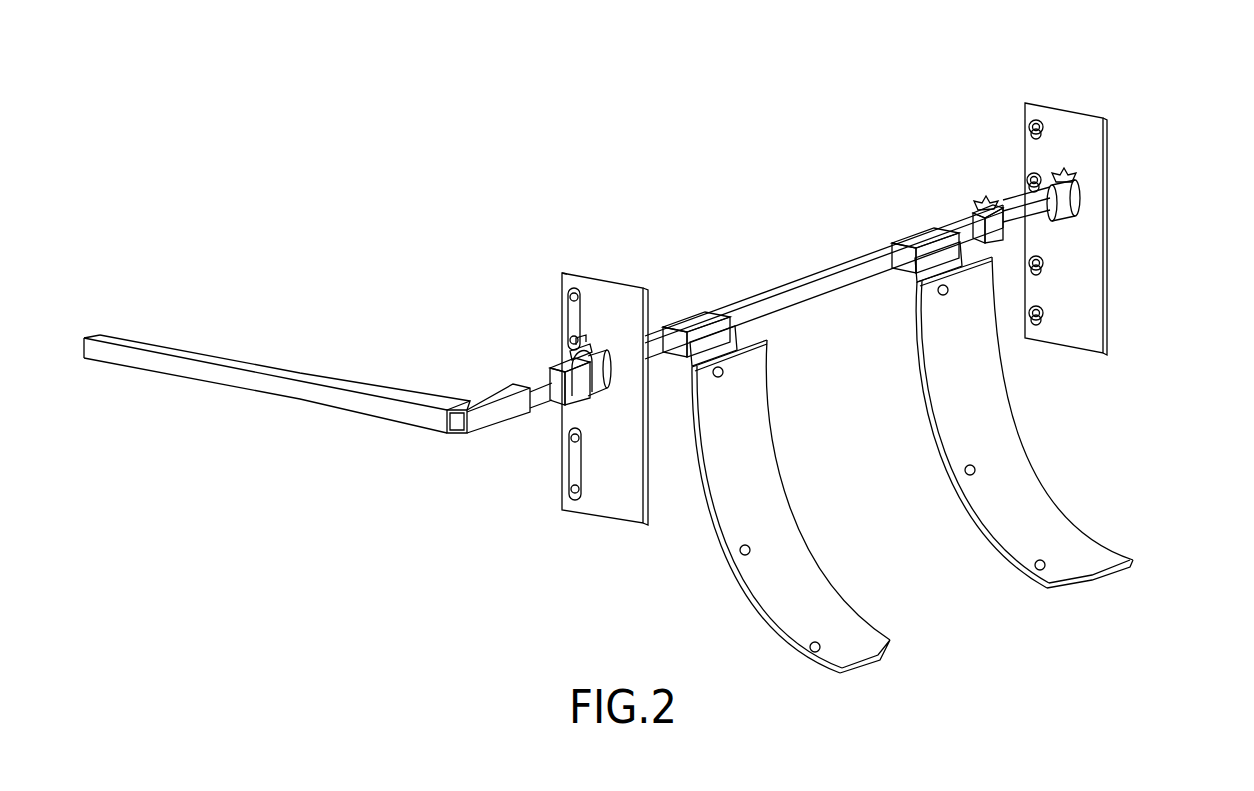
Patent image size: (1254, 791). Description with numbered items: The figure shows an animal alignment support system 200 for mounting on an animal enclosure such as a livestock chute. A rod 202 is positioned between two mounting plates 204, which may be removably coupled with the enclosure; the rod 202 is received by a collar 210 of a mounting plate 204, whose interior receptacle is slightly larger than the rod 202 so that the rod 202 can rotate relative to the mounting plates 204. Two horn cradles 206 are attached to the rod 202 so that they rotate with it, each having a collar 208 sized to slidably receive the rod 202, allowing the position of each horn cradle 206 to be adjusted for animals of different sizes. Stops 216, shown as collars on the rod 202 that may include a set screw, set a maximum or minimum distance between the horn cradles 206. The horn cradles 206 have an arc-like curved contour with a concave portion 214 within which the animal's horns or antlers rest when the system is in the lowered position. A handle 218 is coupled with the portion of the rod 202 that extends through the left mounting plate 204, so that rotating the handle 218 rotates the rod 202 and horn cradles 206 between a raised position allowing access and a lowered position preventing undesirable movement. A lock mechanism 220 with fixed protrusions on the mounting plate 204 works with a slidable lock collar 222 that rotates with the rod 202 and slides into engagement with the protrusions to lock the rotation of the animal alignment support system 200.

The animal alignment support system 200 is at (1107, 87).
The rod 202 is at (807, 295).
The mounting plates 204 is at (610, 288).
The horn cradles 206 is at (1027, 552).
The collar 208 is at (913, 233).
The collar 210 is at (1072, 196).
The concave portion 214 is at (803, 571).
The stops 216 is at (978, 200).
The handle 218 is at (208, 370).
The lock mechanism 220 is at (572, 348).
The lock collar 222 is at (556, 397).